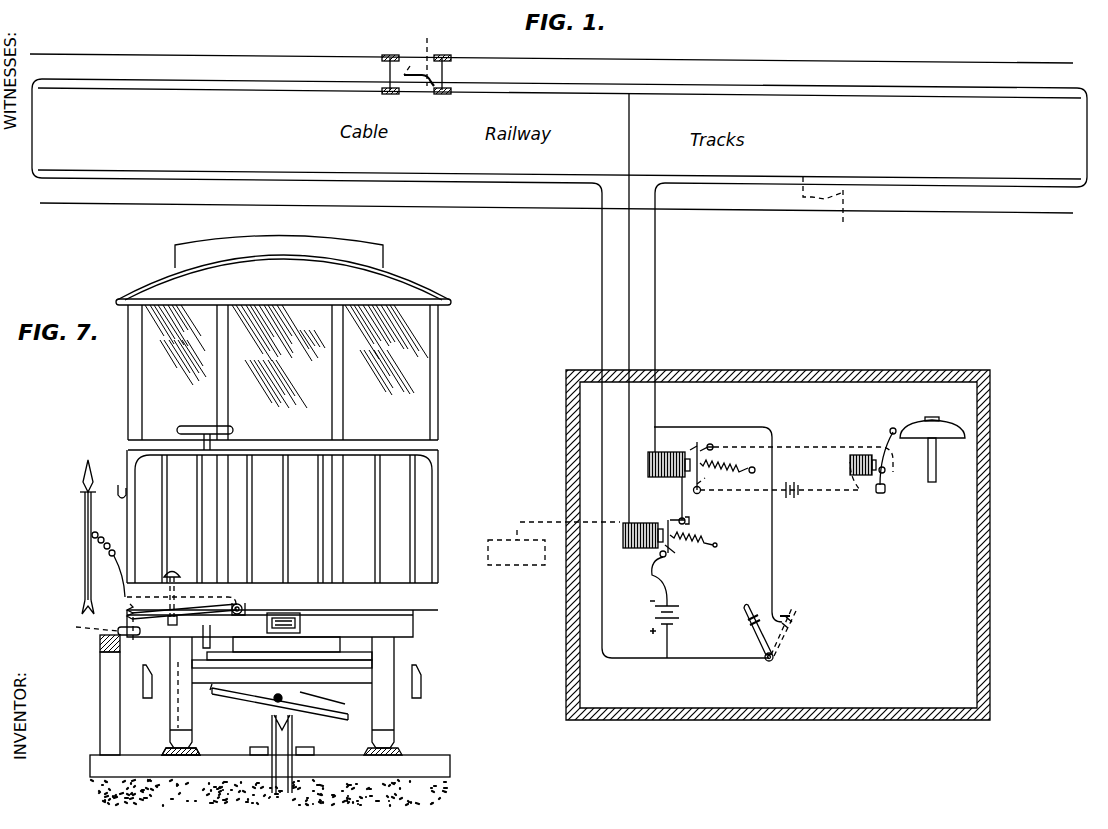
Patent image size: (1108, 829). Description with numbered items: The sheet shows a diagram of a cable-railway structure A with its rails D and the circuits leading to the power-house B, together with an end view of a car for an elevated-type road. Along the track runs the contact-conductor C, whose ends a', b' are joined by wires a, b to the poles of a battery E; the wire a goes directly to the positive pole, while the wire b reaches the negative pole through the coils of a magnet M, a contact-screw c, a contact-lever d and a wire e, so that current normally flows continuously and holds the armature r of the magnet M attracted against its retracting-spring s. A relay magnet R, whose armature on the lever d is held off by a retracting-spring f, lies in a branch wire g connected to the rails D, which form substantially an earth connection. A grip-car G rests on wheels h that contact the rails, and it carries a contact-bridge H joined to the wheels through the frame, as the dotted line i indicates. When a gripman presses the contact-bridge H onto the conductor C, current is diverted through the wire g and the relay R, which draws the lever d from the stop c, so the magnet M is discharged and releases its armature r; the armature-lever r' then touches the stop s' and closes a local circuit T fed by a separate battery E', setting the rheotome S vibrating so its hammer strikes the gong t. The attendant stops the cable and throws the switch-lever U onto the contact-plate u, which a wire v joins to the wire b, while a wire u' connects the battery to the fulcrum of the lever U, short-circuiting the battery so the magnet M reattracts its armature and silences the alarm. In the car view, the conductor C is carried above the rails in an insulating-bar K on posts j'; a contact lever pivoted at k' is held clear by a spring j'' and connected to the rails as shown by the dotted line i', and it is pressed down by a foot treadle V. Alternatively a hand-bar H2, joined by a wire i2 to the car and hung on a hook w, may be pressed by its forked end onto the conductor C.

In FIG. 1, the rails D is at (551, 128).
In FIG. 1, the contact-conductor C is at (315, 89).
In FIG. 7, the contact-conductor C is at (91, 622).
In FIG. 1, the cable-railway structure A is at (938, 131).
In FIG. 1, the grip-car G is at (614, 133).
In FIG. 7, the grip-car G is at (283, 437).
In FIG. 1, the wheels h is at (416, 74).
In FIG. 1, the dotted line i is at (419, 66).
In FIG. 1, the contact-bridge H is at (634, 133).
In FIG. 7, the contact-bridge H is at (121, 616).
In FIG. 1, the branch circuit wire g is at (627, 308).
In FIG. 1, the end of contact-conductor a' is at (588, 195).
In FIG. 1, the end of contact-conductor b' is at (666, 195).
In FIG. 1, the wire a is at (599, 488).
In FIG. 1, the wire b is at (659, 340).
In FIG. 1, the power-house B is at (778, 545).
In FIG. 1, the relay magnet R is at (645, 545).
In FIG. 1, the contact-screw c is at (682, 500).
In FIG. 1, the contact-lever d is at (675, 552).
In FIG. 1, the retracting-spring f is at (693, 548).
In FIG. 1, the wire e is at (665, 578).
In FIG. 1, the electric battery E is at (657, 629).
In FIG. 1, the magnet M is at (714, 524).
In FIG. 1, the retracting-spring s is at (727, 460).
In FIG. 1, the stop s' is at (718, 441).
In FIG. 1, the armature-lever r' is at (689, 440).
In FIG. 1, the armature r is at (704, 477).
In FIG. 1, the local circuit T is at (796, 458).
In FIG. 1, the separate battery E' is at (793, 498).
In FIG. 1, the rheotome S is at (873, 465).
In FIG. 1, the gong t is at (932, 454).
In FIG. 1, the wire v is at (781, 540).
In FIG. 1, the contact-plate u is at (794, 624).
In FIG. 1, the wire u' is at (718, 653).
In FIG. 1, the switch-lever U is at (764, 617).
In FIG. 7, the hook w is at (117, 485).
In FIG. 7, the hand-bar H2 is at (73, 537).
In FIG. 7, the wire i2 is at (108, 564).
In FIG. 7, the treadle V is at (171, 586).
In FIG. 7, the pivot k' is at (196, 603).
In FIG. 7, the dotted line i' is at (181, 654).
In FIG. 7, the insulating-bar K is at (100, 641).
In FIG. 7, the posts j' is at (109, 703).
In FIG. 7, the spring j'' is at (138, 629).